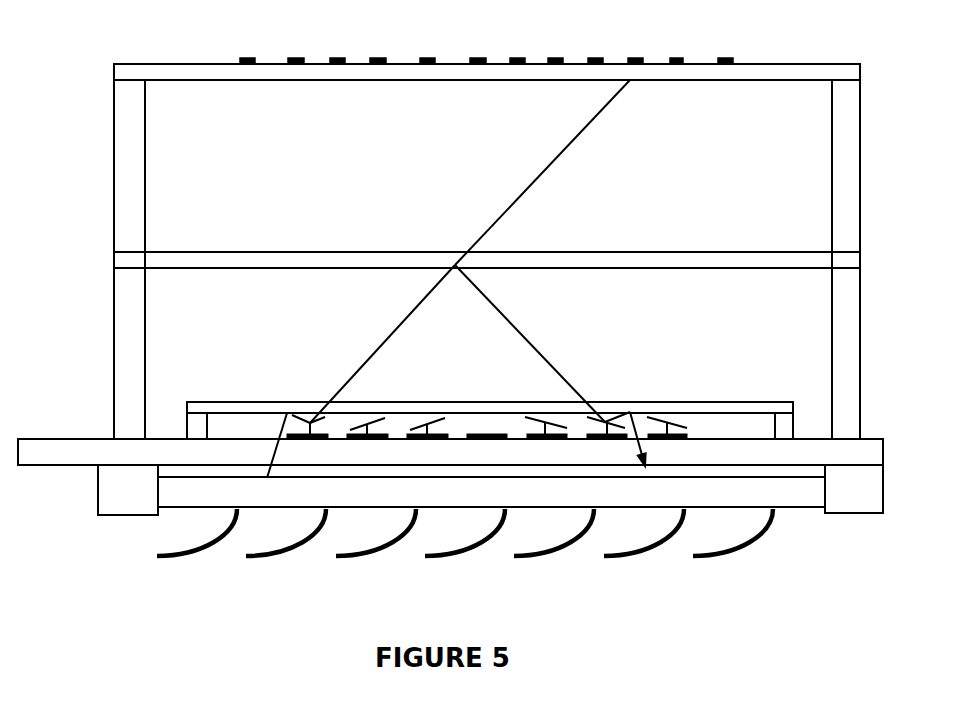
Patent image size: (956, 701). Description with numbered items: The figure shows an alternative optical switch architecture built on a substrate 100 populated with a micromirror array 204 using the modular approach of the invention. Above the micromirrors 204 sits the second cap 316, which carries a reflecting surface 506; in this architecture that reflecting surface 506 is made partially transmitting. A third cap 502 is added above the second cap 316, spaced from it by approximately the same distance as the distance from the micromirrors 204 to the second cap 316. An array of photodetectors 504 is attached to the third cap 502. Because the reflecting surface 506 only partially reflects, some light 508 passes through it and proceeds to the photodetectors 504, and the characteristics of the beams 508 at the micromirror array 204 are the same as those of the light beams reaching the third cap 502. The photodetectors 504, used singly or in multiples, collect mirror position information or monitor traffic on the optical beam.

The base plate / substrate 100 is at (68, 438).
The micromirrors 204 is at (667, 420).
The second cap 316 is at (115, 260).
The third cap 502 is at (112, 72).
The array of photodetectors 504 is at (233, 55).
The reflecting surface 506 is at (453, 262).
The light 508 is at (562, 152).